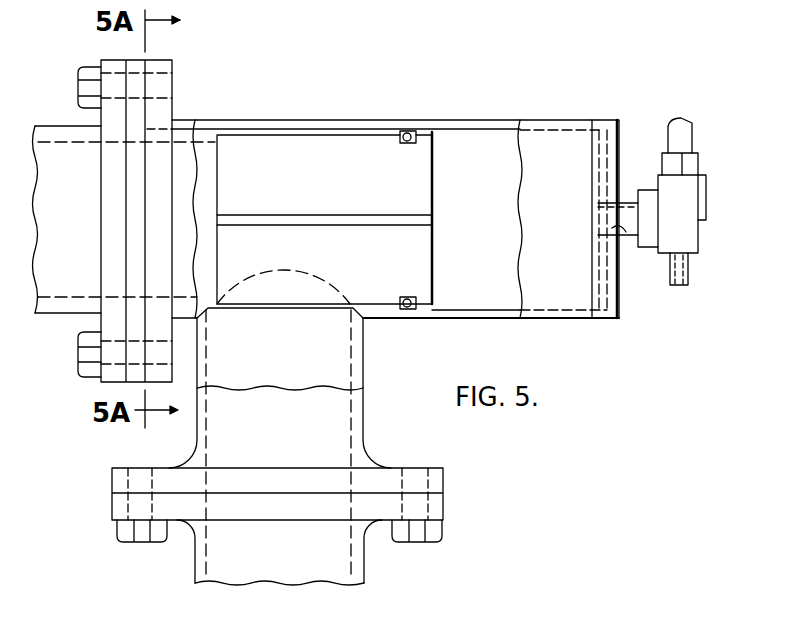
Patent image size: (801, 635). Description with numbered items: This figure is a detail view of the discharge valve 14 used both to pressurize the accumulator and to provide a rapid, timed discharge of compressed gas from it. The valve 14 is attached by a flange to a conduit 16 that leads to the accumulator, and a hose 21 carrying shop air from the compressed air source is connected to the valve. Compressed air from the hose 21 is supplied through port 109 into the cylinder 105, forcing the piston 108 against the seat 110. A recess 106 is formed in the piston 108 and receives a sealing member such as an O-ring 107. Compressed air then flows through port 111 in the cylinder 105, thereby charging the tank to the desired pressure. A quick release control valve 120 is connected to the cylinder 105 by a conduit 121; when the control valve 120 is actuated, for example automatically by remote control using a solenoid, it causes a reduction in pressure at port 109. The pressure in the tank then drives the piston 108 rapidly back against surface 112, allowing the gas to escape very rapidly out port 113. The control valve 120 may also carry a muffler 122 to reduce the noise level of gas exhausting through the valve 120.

The discharge valve 14 is at (482, 116).
The conduit 16 is at (50, 125).
The hose 21 is at (693, 135).
The cylinder 105 is at (548, 318).
The recess 106 is at (405, 310).
The O-ring 107 is at (407, 131).
The piston 108 is at (432, 182).
The port 109 is at (618, 230).
The seat 110 is at (218, 140).
The port 111 is at (420, 224).
The surface 112 is at (596, 154).
The port 113 is at (305, 562).
The quick release control valve 120 is at (700, 233).
The conduit 121 is at (629, 200).
The muffler 122 is at (691, 273).